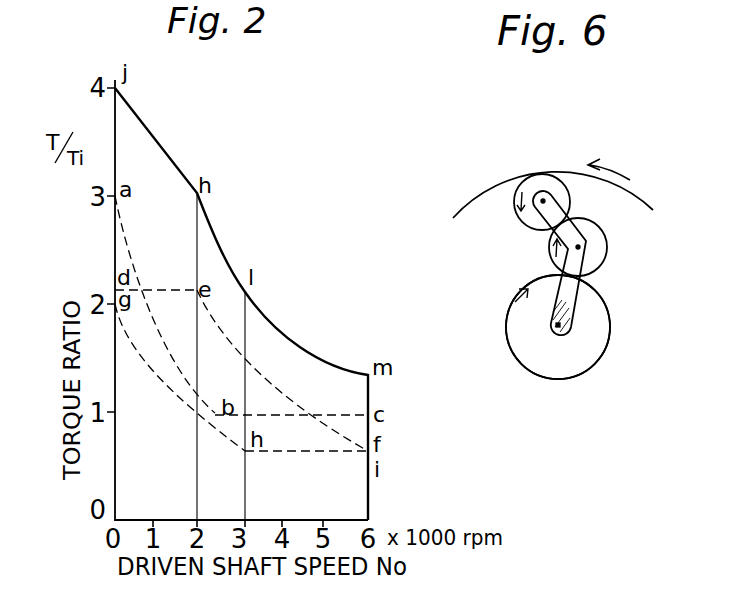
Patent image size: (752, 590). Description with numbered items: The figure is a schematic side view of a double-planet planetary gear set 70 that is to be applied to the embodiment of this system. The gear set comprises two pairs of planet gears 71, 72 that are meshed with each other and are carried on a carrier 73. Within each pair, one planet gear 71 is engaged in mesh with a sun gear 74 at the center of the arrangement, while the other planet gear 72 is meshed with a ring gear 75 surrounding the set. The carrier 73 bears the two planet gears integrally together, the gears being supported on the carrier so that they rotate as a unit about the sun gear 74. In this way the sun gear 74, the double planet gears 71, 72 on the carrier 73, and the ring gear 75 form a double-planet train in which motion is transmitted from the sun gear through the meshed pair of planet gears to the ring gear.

The double-planet planetary gear set 70 is at (610, 312).
The planet gear 71 is at (598, 238).
The planet gear 72 is at (533, 183).
The carrier 73 is at (550, 326).
The sun gear 74 is at (583, 350).
The ring gear 75 is at (484, 194).